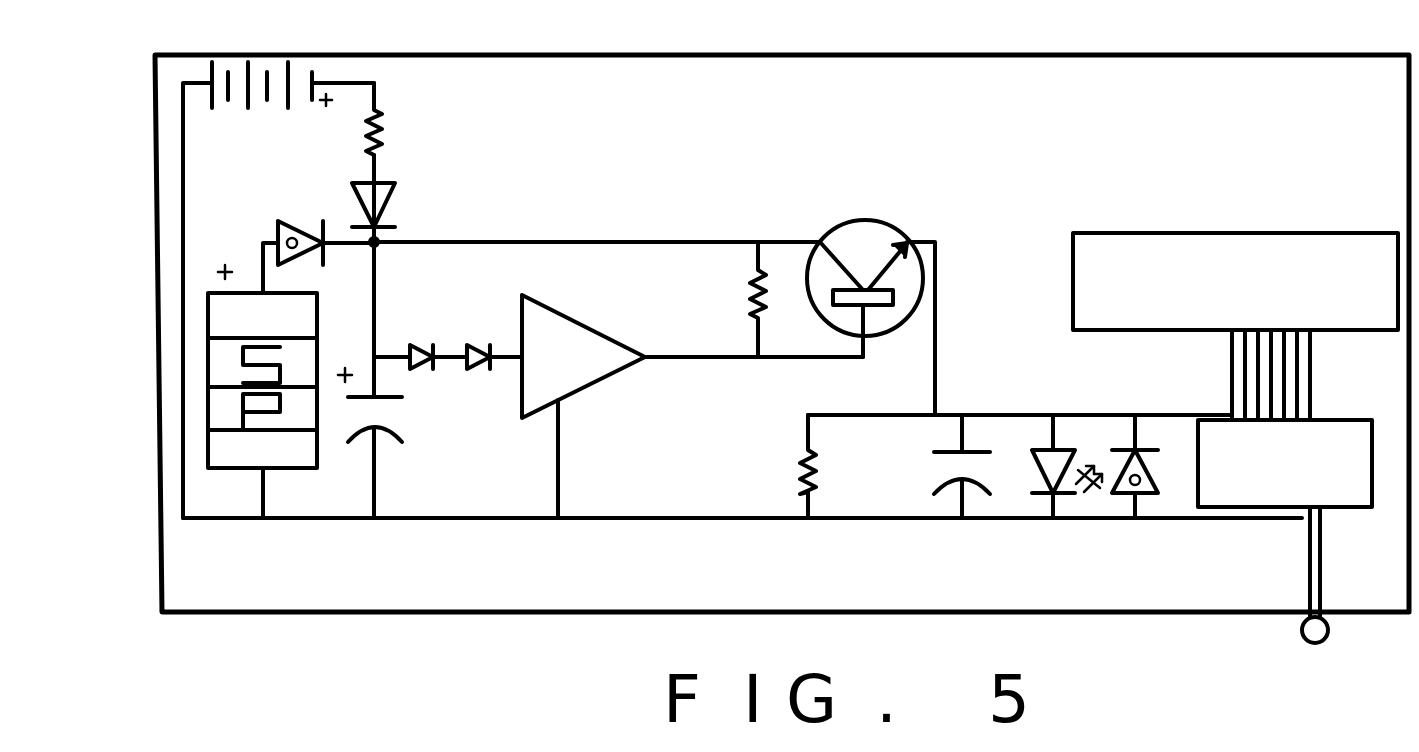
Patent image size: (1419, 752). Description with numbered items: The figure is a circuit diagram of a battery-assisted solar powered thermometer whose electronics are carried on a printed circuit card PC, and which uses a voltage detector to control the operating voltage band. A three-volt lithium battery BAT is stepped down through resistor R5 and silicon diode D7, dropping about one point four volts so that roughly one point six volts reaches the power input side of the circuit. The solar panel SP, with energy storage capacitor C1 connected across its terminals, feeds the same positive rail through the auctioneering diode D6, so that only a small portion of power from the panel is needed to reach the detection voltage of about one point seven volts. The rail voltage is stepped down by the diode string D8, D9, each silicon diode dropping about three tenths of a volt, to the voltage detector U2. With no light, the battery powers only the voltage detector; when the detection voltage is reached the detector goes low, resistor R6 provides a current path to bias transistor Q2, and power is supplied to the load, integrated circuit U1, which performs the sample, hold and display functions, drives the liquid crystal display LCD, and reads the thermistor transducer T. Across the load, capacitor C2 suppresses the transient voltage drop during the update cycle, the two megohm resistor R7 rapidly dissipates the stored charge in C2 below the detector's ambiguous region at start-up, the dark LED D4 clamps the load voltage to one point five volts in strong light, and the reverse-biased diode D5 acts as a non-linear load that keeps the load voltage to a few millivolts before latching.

The printed circuit card PC is at (782, 334).
The lithium battery BAT is at (272, 102).
The resistor R5 is at (399, 119).
The auctioneering diode D6 is at (318, 240).
The silicon diode D7 is at (394, 205).
The solar panel SP is at (262, 391).
The energy storage capacitor C1 is at (390, 405).
The silicon diode D8 is at (420, 340).
The silicon diode D9 is at (491, 340).
The voltage detector U2 is at (692, 406).
The resistor R6 is at (727, 299).
The transistor Q2 is at (871, 293).
The resistor R7 is at (779, 466).
The capacitor C2 is at (934, 466).
The dark LED D4 is at (1066, 487).
The diode D5 is at (1133, 487).
The integrated circuit U1 is at (1285, 463).
The liquid crystal display LCD is at (1235, 326).
The transducer T is at (1329, 578).